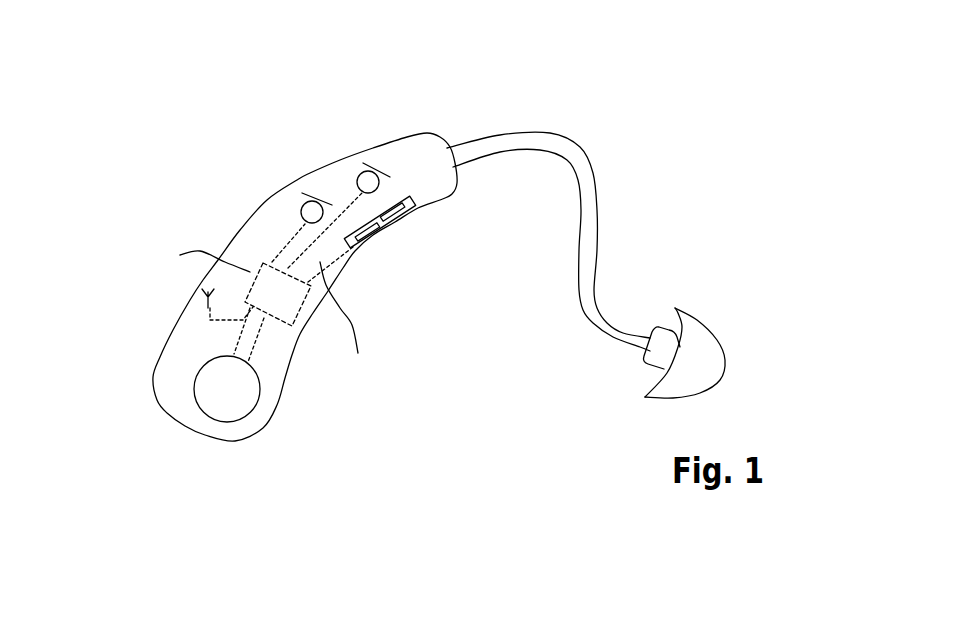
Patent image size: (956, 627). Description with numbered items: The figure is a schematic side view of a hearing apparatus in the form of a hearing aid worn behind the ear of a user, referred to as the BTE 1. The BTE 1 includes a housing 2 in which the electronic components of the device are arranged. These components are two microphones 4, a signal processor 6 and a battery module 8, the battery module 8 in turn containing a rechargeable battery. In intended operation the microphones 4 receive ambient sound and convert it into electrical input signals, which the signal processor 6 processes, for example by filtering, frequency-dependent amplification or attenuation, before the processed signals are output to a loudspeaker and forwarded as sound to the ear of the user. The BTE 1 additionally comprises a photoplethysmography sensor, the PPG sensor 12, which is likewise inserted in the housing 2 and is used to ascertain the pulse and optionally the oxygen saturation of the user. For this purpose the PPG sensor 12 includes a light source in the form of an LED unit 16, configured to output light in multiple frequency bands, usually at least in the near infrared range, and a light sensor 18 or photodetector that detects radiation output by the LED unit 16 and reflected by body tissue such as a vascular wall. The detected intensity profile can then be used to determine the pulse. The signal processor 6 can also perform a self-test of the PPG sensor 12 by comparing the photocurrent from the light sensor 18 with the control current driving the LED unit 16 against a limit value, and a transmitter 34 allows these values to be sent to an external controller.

The BTE 1 is at (588, 102).
The housing 2 is at (426, 132).
The microphones 4 is at (310, 197).
The signal processor 6 is at (265, 266).
The battery module 8 is at (192, 378).
The PPG sensor 12 is at (425, 199).
The LED unit 16 is at (397, 222).
The light sensor 18 is at (367, 247).
The transmitter 34 is at (205, 303).